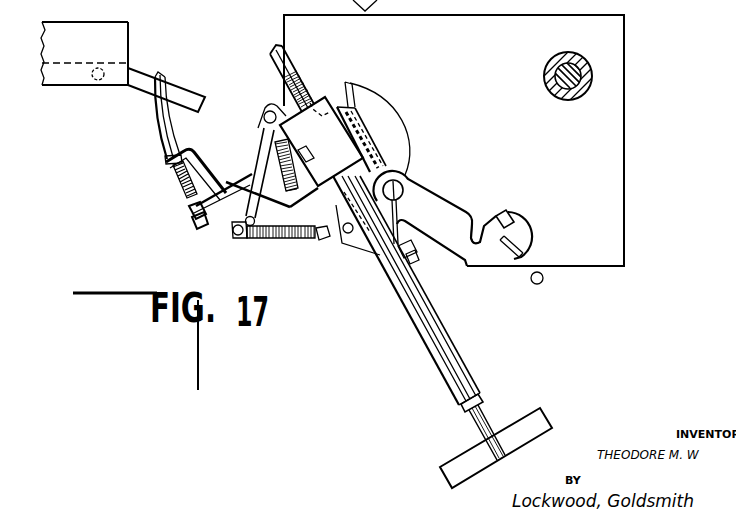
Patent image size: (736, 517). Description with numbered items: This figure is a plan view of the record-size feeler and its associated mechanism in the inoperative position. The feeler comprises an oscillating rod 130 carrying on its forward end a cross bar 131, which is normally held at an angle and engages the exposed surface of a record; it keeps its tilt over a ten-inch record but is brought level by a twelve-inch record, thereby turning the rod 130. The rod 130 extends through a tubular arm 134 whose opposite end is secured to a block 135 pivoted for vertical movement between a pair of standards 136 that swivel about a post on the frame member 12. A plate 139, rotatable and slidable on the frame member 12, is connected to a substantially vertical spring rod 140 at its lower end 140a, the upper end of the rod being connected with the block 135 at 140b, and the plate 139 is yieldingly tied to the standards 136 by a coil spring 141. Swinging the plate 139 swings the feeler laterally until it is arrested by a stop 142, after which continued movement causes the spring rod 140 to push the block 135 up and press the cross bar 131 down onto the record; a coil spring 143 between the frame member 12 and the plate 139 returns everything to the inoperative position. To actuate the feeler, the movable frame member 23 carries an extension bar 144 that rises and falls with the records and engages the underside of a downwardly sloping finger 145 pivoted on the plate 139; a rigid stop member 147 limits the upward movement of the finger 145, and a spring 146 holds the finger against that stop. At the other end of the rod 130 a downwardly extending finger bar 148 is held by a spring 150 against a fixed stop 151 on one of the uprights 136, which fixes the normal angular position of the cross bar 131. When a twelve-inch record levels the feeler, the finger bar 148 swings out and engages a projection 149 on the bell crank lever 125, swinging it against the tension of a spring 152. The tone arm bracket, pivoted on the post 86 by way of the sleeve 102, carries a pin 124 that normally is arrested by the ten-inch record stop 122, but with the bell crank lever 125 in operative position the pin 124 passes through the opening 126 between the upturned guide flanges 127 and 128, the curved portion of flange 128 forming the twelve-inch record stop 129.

The frame member 12 is at (620, 188).
The movable frame member 23 is at (118, 41).
The post 86 is at (580, 73).
The sleeve 102 is at (590, 87).
The ten-inch record stop 122 is at (415, 252).
The pin 124 is at (543, 283).
The bell crank lever 125 is at (455, 207).
The opening 126 is at (519, 227).
The guide flange 127 is at (520, 252).
The guide flange 128 is at (503, 204).
The twelve-inch record stop 129 is at (476, 266).
The oscillating rod 130 is at (488, 416).
The cross bar 131 is at (523, 427).
The tubular arm 134 is at (421, 345).
The block 135 is at (321, 141).
The standards 136 is at (362, 147).
The plate 139 is at (262, 128).
The spring rod 140 is at (262, 187).
The lower end connection of spring rod 140a is at (229, 229).
The upper end connection of spring rod 140b is at (260, 138).
The coil spring 141 is at (263, 122).
The stop 142 is at (382, 173).
The coil spring 143 is at (282, 243).
The extension bar 144 is at (182, 92).
The finger 145 is at (160, 112).
The spring 146 is at (180, 181).
The stop member 147 is at (165, 160).
The finger bar 148 is at (300, 68).
The projection 149 is at (350, 98).
The spring 150 is at (284, 108).
The fixed stop 151 is at (276, 48).
The spring 152 is at (406, 214).